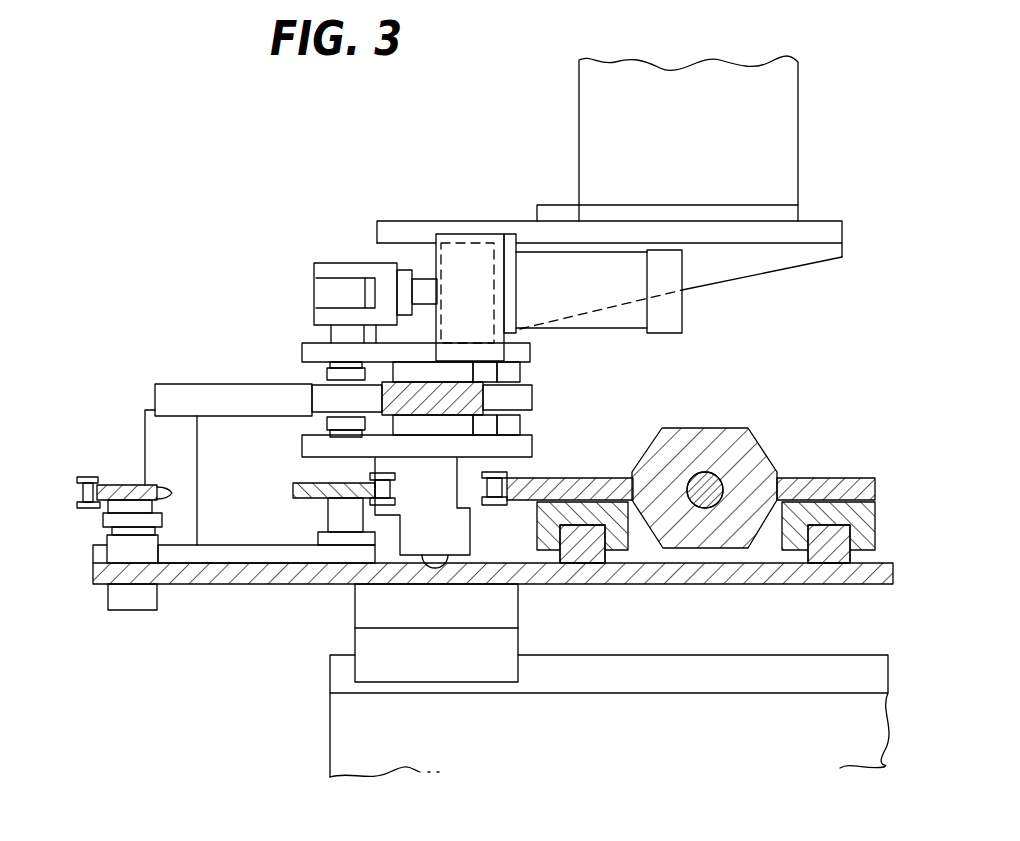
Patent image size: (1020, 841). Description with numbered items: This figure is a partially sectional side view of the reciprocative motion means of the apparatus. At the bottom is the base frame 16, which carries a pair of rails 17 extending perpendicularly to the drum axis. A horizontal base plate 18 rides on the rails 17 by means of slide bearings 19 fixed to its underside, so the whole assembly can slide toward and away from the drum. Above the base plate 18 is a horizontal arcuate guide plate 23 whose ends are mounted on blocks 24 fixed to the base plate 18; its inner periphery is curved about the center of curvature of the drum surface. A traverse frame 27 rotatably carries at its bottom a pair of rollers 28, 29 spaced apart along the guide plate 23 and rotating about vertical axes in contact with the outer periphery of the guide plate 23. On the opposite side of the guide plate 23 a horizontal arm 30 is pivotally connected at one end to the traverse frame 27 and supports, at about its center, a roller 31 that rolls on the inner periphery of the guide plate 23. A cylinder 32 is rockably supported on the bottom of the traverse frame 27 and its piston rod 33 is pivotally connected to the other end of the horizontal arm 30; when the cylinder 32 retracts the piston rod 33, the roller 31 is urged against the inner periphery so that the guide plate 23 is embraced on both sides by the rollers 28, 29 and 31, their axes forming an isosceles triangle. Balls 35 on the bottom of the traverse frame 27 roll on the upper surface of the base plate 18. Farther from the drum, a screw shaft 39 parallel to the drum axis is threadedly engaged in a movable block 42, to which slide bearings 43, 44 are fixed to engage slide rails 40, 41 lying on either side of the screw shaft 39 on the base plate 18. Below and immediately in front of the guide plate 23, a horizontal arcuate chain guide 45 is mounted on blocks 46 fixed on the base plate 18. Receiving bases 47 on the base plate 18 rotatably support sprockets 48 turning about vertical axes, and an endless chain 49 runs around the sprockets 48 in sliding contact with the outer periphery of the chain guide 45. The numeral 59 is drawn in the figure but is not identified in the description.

The base frame 16 is at (330, 742).
The rails 17 is at (650, 675).
The base plate 18 is at (692, 578).
The slide bearings 19 is at (373, 647).
The arcuate guide plate 23 is at (242, 390).
The blocks 24 is at (178, 449).
The traverse frame 27 is at (580, 98).
The roller 28 is at (533, 407).
The roller 29 is at (512, 409).
The horizontal arm 30 is at (328, 297).
The roller 31 is at (323, 403).
The cylinder 32 is at (632, 322).
The piston rod 33 is at (428, 285).
The balls 35 is at (435, 565).
The screw shaft 39 is at (738, 475).
The slide rail 40 is at (588, 560).
The slide rail 41 is at (835, 553).
The movable block 42 is at (713, 433).
The slide bearing 43 is at (542, 545).
The slide bearing 44 is at (845, 498).
The arcuate chain guide 45 is at (293, 489).
The blocks 46 is at (328, 515).
The receiving bases 47 is at (122, 548).
The sprockets 48 is at (133, 485).
The endless chain 49 is at (83, 477).
The positioning device 59 is at (716, 386).